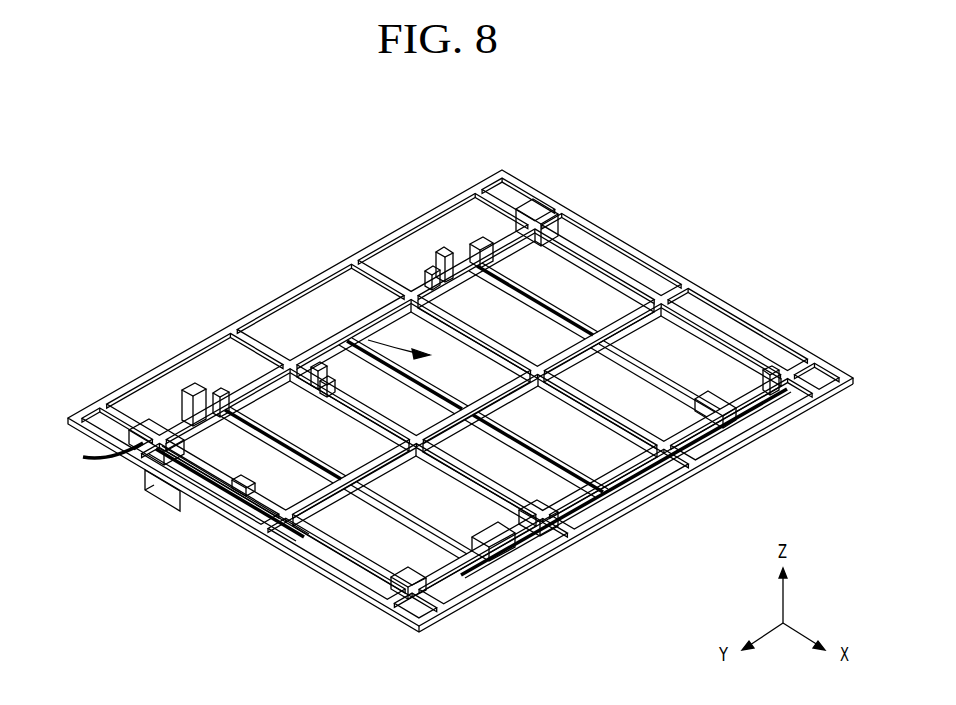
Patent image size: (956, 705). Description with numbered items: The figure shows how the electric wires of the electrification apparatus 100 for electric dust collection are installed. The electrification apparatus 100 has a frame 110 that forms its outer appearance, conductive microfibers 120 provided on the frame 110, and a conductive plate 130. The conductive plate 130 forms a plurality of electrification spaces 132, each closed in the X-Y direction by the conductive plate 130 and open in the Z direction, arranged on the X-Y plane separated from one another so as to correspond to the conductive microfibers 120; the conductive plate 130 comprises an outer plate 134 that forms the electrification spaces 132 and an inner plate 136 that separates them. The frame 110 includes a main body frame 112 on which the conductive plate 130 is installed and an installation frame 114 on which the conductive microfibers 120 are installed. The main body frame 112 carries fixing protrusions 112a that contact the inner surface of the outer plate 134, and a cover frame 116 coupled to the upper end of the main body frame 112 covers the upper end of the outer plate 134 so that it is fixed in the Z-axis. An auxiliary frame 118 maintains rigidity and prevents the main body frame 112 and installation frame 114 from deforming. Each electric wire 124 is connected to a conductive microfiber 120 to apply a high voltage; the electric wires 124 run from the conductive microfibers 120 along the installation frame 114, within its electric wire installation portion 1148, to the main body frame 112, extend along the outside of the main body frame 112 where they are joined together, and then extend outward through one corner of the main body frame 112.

The electrification apparatus 100 is at (109, 167).
The frame 110 is at (237, 547).
The main body frame 112 is at (307, 560).
The fixing protrusions 112a is at (240, 393).
The installation frame 114 is at (187, 427).
The cover frame 116 is at (157, 485).
The auxiliary frame 118 is at (407, 224).
The conductive microfiber 120 is at (390, 570).
The electric wire 124 is at (93, 457).
The conductive plate 130 is at (410, 307).
The electrification space 132 is at (575, 300).
The outer plate 134 is at (705, 343).
The inner plate 136 is at (588, 427).
The electric wire installation portion 1148 is at (260, 480).